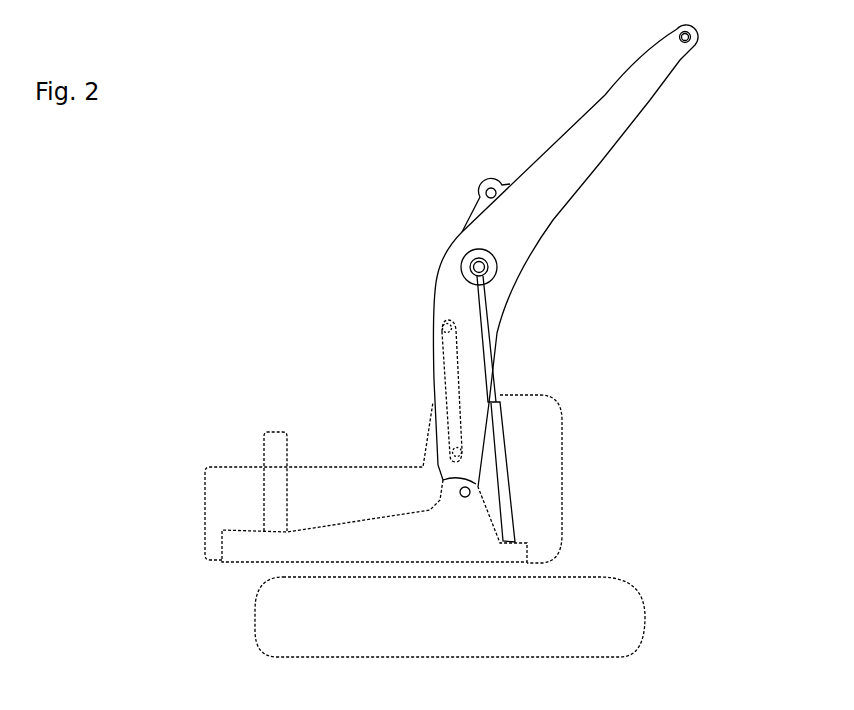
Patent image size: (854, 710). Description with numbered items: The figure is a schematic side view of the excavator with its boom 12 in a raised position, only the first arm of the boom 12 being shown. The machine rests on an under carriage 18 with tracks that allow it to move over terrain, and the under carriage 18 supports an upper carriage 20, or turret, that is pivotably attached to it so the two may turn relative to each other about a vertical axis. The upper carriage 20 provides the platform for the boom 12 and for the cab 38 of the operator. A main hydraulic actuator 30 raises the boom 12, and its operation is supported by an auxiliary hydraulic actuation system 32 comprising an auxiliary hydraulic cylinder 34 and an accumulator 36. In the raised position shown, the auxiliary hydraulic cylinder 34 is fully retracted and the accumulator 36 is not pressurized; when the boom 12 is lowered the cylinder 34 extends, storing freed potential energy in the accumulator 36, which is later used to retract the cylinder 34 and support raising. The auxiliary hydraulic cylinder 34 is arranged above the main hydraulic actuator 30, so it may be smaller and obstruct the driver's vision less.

The boom 12 is at (560, 167).
The under carriage 18 is at (645, 650).
The upper carriage 20 is at (588, 523).
The main hydraulic actuator 30 is at (497, 333).
The auxiliary hydraulic actuation system 32 is at (362, 392).
The auxiliary hydraulic cylinder 34 is at (447, 359).
The accumulator 36 is at (265, 447).
The cab 38 is at (537, 447).